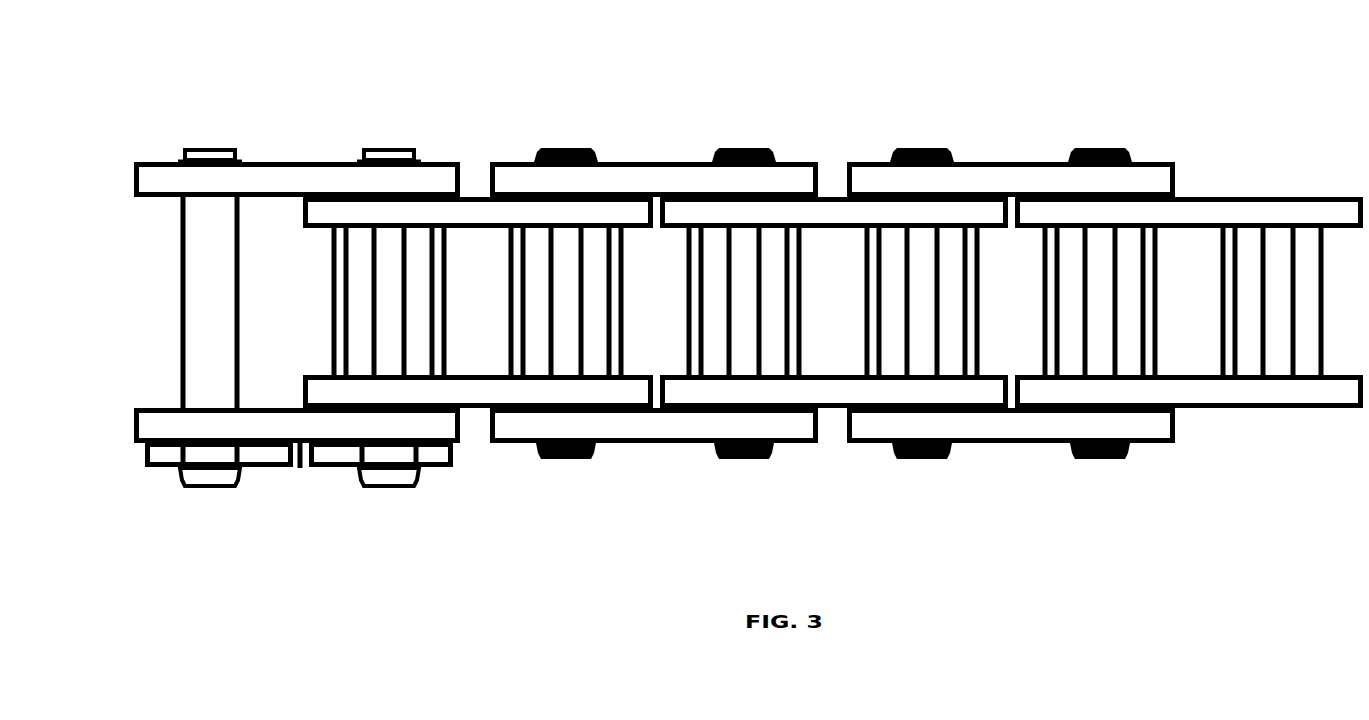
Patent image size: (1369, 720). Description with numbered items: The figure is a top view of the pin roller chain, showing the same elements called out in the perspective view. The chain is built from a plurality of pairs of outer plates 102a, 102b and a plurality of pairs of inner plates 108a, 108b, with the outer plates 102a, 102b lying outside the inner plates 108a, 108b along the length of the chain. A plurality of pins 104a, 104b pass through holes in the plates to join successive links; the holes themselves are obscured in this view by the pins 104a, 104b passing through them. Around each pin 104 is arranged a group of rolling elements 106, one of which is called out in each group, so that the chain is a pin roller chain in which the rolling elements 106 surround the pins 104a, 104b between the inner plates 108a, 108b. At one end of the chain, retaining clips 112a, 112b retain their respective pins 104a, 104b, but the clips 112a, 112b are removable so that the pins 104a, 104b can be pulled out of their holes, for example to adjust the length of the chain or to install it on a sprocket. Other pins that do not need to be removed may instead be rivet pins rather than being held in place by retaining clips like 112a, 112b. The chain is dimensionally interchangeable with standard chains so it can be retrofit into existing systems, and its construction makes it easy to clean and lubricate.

The outer plate 102a is at (1044, 425).
The outer plate 102b is at (1040, 166).
The pin 104 is at (200, 298).
The pin 104a is at (925, 462).
The pin 104b is at (1100, 462).
The rolling element 106 is at (1280, 258).
The inner plate 108a is at (1262, 388).
The inner plate 108b is at (1197, 207).
The retaining clip 112a is at (280, 468).
The retaining clip 112b is at (334, 468).